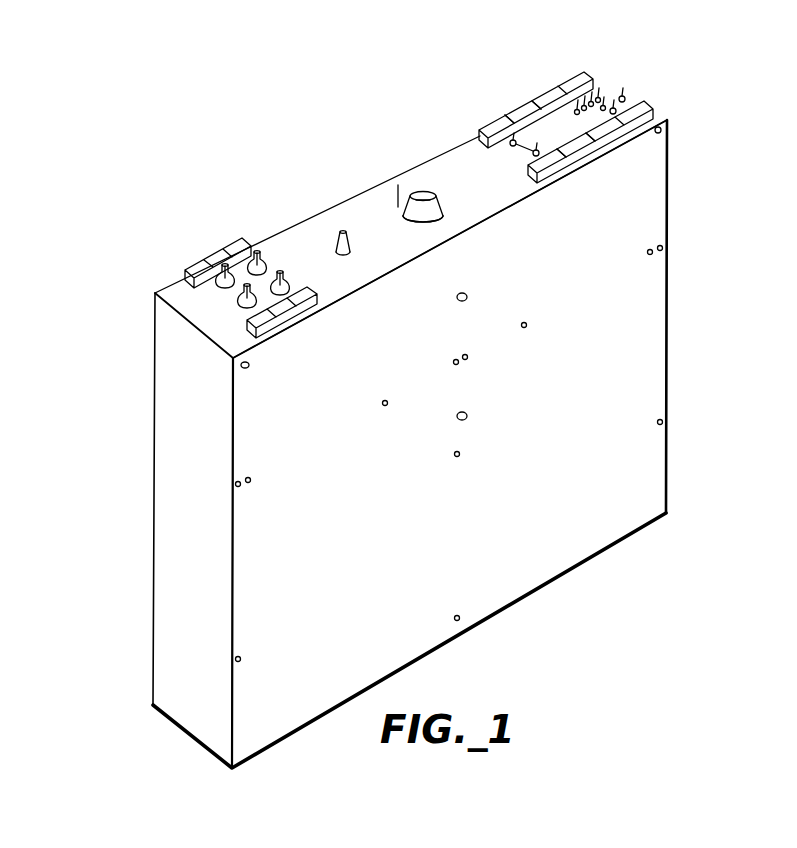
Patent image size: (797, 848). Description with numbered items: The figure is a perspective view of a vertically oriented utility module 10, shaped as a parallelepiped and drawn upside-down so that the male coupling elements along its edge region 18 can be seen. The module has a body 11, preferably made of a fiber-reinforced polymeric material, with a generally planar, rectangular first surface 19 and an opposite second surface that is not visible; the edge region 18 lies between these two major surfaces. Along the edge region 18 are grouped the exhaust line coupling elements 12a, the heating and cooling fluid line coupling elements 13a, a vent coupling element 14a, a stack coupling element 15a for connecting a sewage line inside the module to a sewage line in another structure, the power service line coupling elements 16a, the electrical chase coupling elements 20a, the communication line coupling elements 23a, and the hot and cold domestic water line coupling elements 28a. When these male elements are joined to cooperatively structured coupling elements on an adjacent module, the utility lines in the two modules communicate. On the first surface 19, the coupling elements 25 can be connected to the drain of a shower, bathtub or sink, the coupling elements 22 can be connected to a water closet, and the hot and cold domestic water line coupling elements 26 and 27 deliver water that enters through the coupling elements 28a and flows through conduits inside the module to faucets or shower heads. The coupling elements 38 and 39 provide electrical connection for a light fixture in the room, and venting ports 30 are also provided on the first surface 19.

The utility module 10 is at (702, 98).
The body 11 is at (433, 157).
The exhaust line coupling elements 12a is at (220, 262).
The heating and cooling fluid line coupling elements 13a is at (246, 284).
The vent coupling element 14a is at (335, 242).
The stack coupling element 15a is at (400, 207).
The power service line coupling elements 16a is at (488, 125).
The edge region 18 is at (398, 185).
The first surface 19 is at (657, 350).
The electrical chase coupling elements 20a is at (523, 113).
The coupling elements 22 is at (527, 327).
The communication line coupling elements 23a is at (592, 99).
The coupling elements 25 is at (661, 131).
The hot and cold domestic water line coupling elements 26 is at (458, 364).
The hot and cold domestic water line coupling elements 27 is at (241, 661).
The hot and cold domestic water line coupling elements 28a is at (627, 100).
The venting ports 30 is at (467, 418).
The coupling elements 38 is at (460, 456).
The coupling elements 39 is at (460, 620).